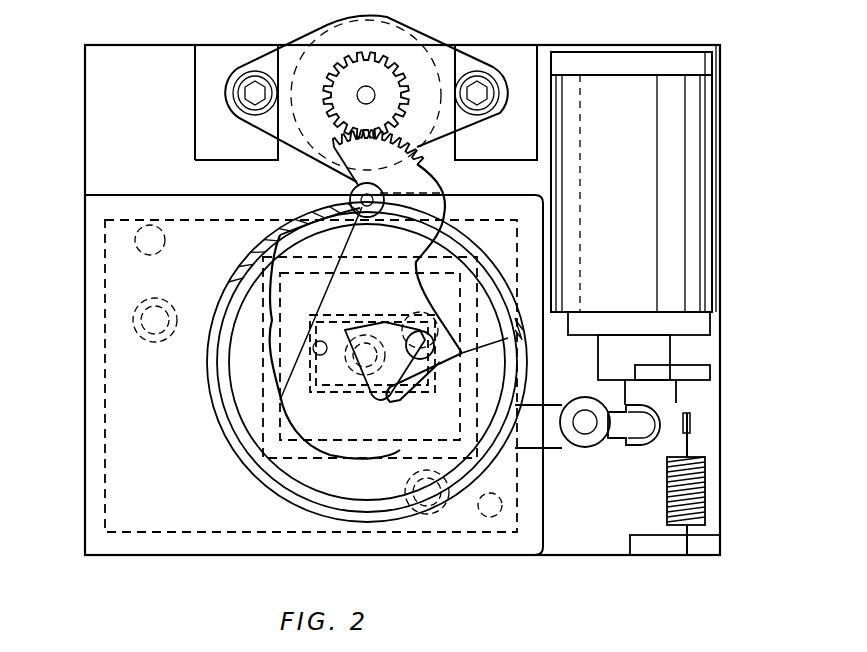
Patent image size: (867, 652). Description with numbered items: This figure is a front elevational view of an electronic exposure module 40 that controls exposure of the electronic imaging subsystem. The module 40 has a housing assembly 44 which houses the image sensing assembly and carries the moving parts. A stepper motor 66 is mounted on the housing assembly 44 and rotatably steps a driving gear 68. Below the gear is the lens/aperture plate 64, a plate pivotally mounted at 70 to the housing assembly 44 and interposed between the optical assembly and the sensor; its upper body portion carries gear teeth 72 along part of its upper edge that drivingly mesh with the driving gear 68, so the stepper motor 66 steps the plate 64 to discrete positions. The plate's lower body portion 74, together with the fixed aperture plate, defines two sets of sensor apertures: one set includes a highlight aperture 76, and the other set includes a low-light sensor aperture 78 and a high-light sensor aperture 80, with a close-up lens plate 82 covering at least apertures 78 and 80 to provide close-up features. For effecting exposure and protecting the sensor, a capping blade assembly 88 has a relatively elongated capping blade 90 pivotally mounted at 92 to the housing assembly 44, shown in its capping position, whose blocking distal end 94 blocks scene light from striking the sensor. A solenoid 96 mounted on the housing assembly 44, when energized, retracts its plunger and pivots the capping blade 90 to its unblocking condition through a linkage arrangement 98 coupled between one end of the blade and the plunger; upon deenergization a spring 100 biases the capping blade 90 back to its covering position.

The electronic exposure module 40 is at (138, 577).
The housing assembly 44 is at (118, 62).
The lens/aperture plate 64 is at (447, 188).
The stepper motor 66 is at (438, 36).
The driving gear 68 is at (340, 63).
The pivot 70 is at (352, 196).
The gear teeth 72 is at (405, 142).
The lower body portion 74 is at (330, 285).
The highlight aperture 76 is at (330, 365).
The low-light sensor aperture 78 is at (345, 385).
The high-light sensor aperture 80 is at (437, 395).
The close-up lens plate 82 is at (380, 327).
The capping blade assembly 88 is at (733, 320).
The capping blade 90 is at (555, 405).
The pivot 92 is at (588, 428).
The blocking distal end 94 is at (325, 395).
The solenoid 96 is at (694, 122).
The linkage arrangement 98 is at (698, 430).
The spring 100 is at (706, 485).